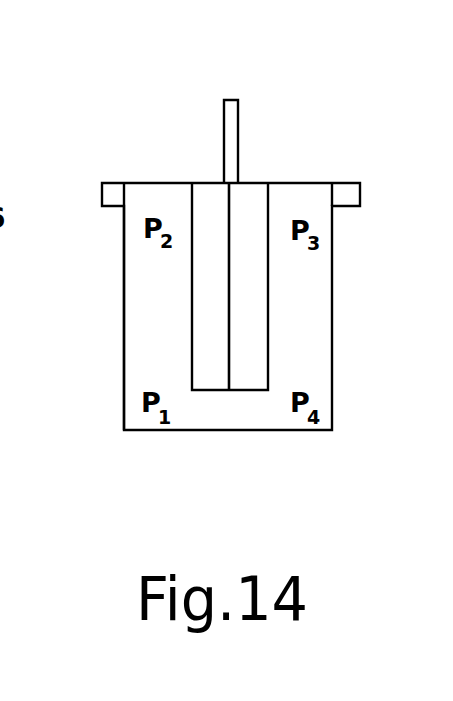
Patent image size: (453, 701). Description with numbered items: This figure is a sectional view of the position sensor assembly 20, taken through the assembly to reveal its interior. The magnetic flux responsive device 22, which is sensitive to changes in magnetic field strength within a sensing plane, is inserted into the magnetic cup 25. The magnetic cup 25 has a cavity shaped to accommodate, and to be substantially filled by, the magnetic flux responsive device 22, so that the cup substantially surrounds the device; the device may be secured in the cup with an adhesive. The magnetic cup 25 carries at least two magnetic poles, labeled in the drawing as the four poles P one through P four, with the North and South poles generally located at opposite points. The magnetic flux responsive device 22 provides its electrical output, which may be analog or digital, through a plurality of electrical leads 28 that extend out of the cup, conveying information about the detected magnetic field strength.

The position sensor assembly 20 is at (322, 127).
The magnetic flux responsive device 22 is at (208, 181).
The magnetic cup 25 is at (124, 247).
The electrical leads 28 is at (231, 100).